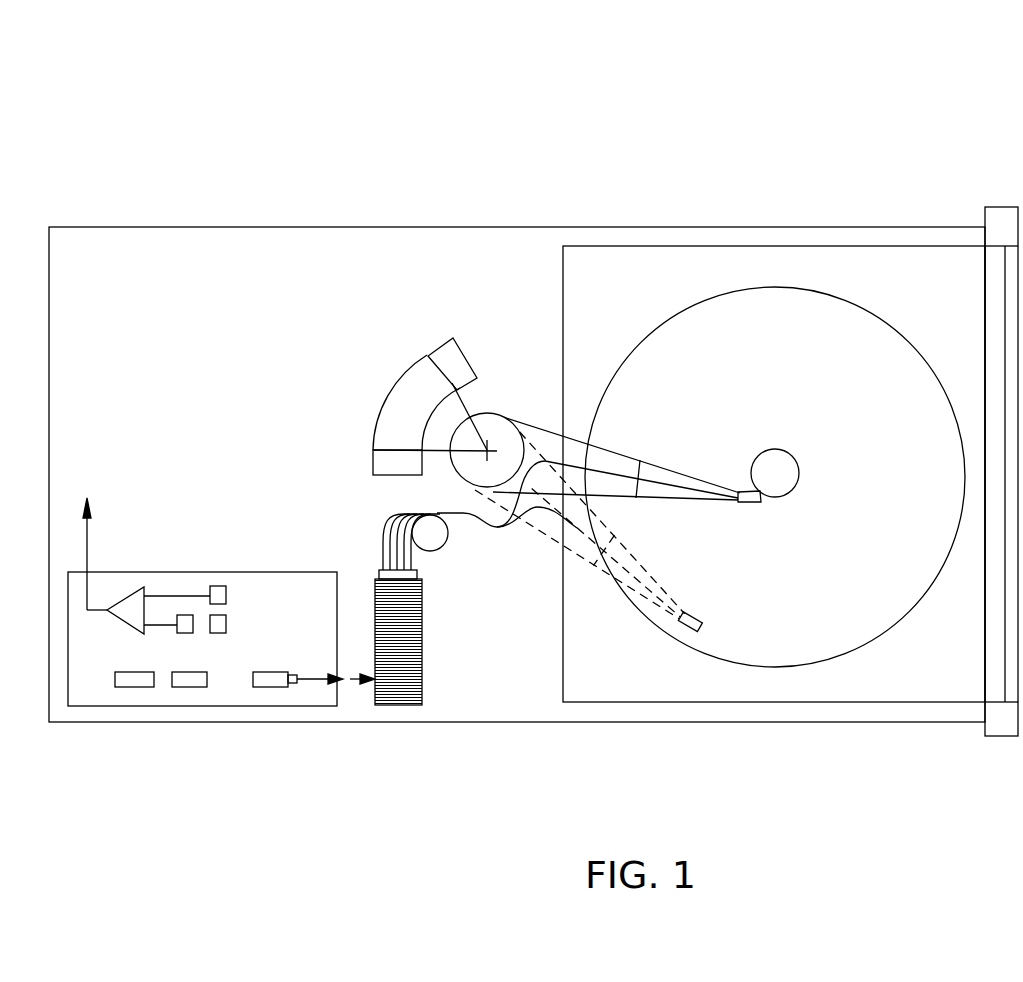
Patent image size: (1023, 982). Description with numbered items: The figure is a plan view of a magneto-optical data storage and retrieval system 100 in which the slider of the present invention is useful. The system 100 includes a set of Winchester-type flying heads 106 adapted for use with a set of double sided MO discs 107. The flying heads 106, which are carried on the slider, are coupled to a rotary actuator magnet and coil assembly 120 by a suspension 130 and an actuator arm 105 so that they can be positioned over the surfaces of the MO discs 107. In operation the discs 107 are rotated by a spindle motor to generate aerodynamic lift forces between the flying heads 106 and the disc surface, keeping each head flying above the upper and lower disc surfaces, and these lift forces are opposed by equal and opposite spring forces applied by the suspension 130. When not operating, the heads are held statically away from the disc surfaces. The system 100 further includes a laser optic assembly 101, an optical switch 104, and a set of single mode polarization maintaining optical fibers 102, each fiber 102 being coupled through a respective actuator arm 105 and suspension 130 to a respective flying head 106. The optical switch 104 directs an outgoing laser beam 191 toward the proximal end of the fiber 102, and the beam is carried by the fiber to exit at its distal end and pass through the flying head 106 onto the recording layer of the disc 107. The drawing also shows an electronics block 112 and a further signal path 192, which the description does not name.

The magneto-optical data storage and retrieval system 100 is at (940, 78).
The laser optic assembly 101 is at (158, 693).
The single mode PM optical fiber 102 is at (362, 516).
The optical switch 104 is at (422, 627).
The actuator arm 105 is at (607, 462).
The flying head 106 is at (755, 503).
The MO disc 107 is at (785, 287).
The controller circuitry 112 is at (327, 590).
The rotary actuator magnet and coil assembly 120 is at (423, 370).
The suspension 130 is at (660, 472).
The outgoing laser beam 191 is at (310, 677).
The data signal path 192 is at (362, 680).